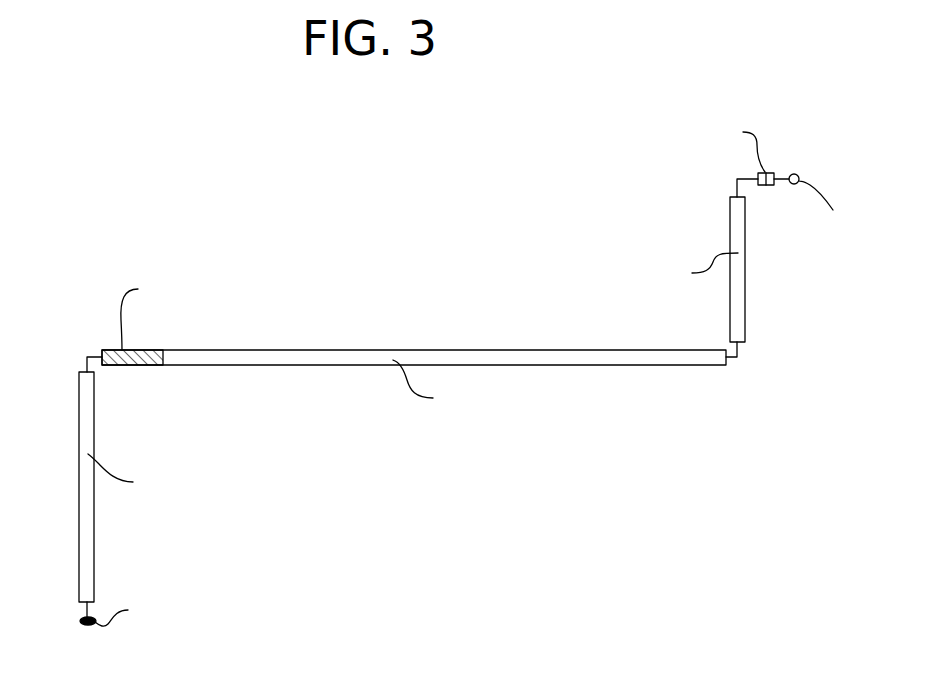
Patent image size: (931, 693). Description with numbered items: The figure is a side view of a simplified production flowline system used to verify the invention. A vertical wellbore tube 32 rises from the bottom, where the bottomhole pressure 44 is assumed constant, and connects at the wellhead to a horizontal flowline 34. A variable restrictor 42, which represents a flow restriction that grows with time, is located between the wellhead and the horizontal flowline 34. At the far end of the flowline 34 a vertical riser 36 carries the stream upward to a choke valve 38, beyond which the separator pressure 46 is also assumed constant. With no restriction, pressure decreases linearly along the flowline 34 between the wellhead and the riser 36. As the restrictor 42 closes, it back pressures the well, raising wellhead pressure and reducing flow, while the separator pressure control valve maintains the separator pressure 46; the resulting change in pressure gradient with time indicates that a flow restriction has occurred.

The vertical wellbore tube 32 is at (95, 557).
The horizontal flowline 34 is at (282, 356).
The vertical riser 36 is at (740, 300).
The choke valve 38 is at (772, 172).
The variable restrictor 42 is at (132, 366).
The bottomhole pressure 44 is at (82, 623).
The separator pressure 46 is at (800, 177).